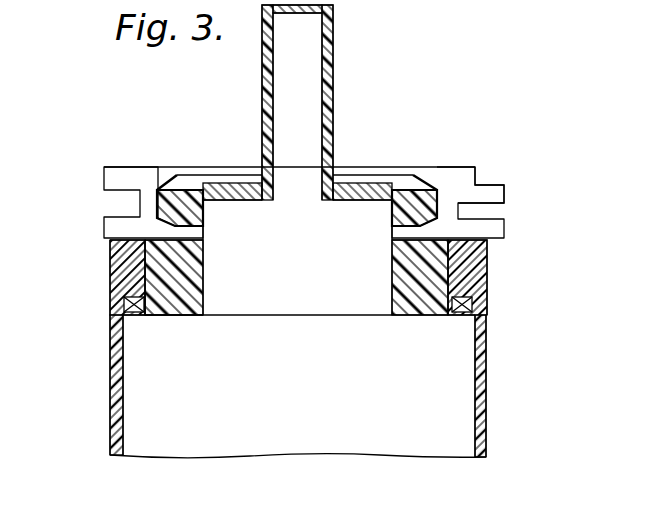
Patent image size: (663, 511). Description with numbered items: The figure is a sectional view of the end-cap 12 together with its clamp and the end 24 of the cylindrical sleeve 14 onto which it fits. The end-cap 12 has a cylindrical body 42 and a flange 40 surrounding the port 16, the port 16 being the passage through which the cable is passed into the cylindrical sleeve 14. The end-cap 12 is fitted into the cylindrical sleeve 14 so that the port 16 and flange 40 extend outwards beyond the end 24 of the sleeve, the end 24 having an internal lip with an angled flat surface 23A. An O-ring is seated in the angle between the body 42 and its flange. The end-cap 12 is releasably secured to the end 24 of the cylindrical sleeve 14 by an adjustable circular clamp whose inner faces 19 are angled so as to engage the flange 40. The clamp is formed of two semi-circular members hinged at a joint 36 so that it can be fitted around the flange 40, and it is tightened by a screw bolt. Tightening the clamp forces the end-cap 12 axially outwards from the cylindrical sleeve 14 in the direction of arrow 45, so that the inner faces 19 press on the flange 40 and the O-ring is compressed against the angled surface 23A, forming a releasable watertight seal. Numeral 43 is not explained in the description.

The end-cap 12 is at (350, 104).
The cylindrical sleeve 14 is at (460, 434).
The port 16 is at (312, 40).
The inner faces 19 is at (165, 172).
The angled flat surface 23A is at (143, 258).
The end of cylindrical sleeve 24 is at (113, 377).
The joint 36 is at (448, 172).
The flange 40 is at (408, 190).
The cylindrical body 42 is at (147, 312).
The insert body 43 is at (478, 255).
The arrow 45 is at (222, 92).